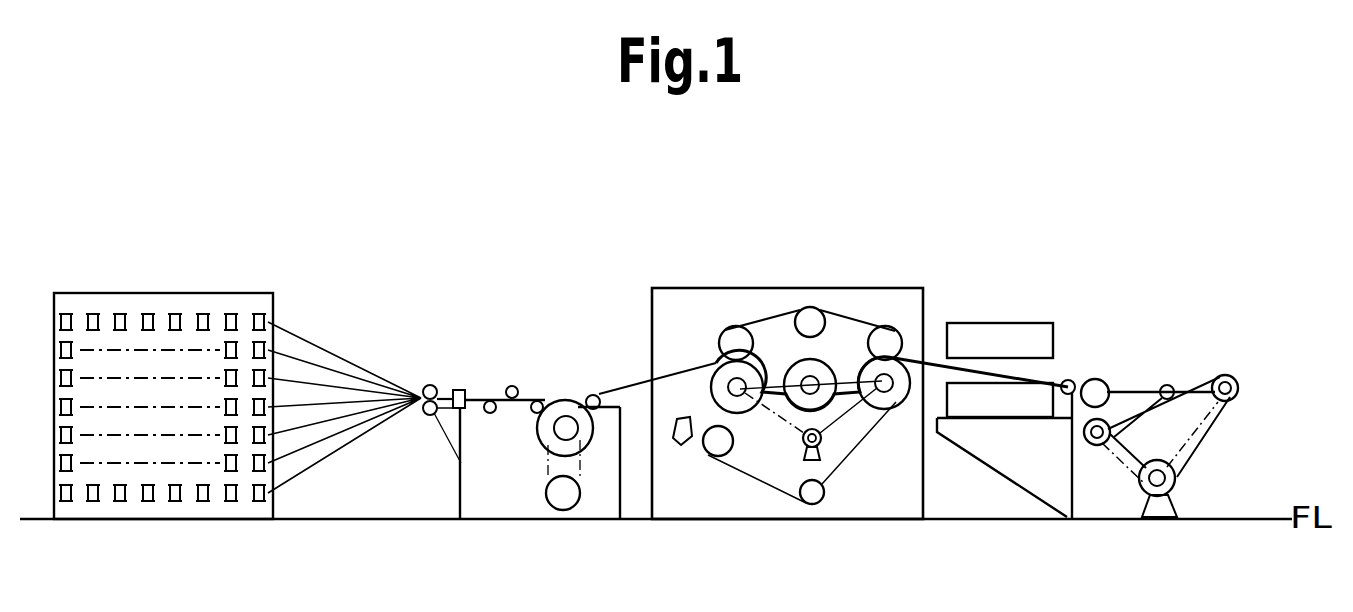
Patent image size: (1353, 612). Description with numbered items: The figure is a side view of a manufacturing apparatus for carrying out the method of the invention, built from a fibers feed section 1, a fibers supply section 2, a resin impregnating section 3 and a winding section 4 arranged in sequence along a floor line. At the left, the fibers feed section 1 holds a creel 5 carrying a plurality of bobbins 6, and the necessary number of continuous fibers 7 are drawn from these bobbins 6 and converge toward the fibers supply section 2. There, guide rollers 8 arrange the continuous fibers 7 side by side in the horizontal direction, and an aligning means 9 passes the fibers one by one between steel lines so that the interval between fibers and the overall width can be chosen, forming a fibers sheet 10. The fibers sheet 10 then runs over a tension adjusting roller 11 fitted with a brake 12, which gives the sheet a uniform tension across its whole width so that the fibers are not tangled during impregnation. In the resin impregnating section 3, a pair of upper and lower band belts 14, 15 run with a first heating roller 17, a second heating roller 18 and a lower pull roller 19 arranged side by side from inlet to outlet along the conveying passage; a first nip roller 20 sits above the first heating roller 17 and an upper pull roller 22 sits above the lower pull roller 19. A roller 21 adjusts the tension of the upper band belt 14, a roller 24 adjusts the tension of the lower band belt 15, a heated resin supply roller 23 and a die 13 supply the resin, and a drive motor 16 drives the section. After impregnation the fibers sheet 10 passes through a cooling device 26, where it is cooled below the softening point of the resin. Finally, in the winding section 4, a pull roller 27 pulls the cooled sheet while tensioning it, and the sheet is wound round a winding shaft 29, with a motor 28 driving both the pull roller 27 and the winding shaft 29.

The fibers feed section 1 is at (237, 407).
The fibers supply section 2 is at (556, 447).
The resin impregnating section 3 is at (847, 421).
The winding section 4 is at (1107, 420).
The creel 5 is at (92, 292).
The bobbin 6 is at (233, 344).
The continuous fibers 7 is at (344, 355).
The guide rollers 8 is at (421, 417).
The aligning means 9 is at (460, 390).
The fibers sheet 10 is at (626, 385).
The tension adjusting roller 11 is at (567, 400).
The brake 12 is at (552, 500).
The die 13 is at (676, 446).
The upper band belt 14 is at (846, 312).
The lower band belt 15 is at (879, 395).
The drive motor 16 is at (813, 461).
The first heating roller 17 is at (740, 395).
The second heating roller 18 is at (818, 410).
The lower pull roller 19 is at (897, 406).
The first nip roller 20 is at (736, 340).
The upper band belt tension adjusting roller 21 is at (810, 318).
The upper pull roller 22 is at (885, 340).
The heated resin supply roller 23 is at (712, 456).
The lower band belt tension adjusting roller 24 is at (811, 504).
The cooling device 26 is at (1025, 330).
The pull roller 27 is at (1095, 446).
The motor 28 is at (1170, 483).
The winding shaft 29 is at (1232, 378).